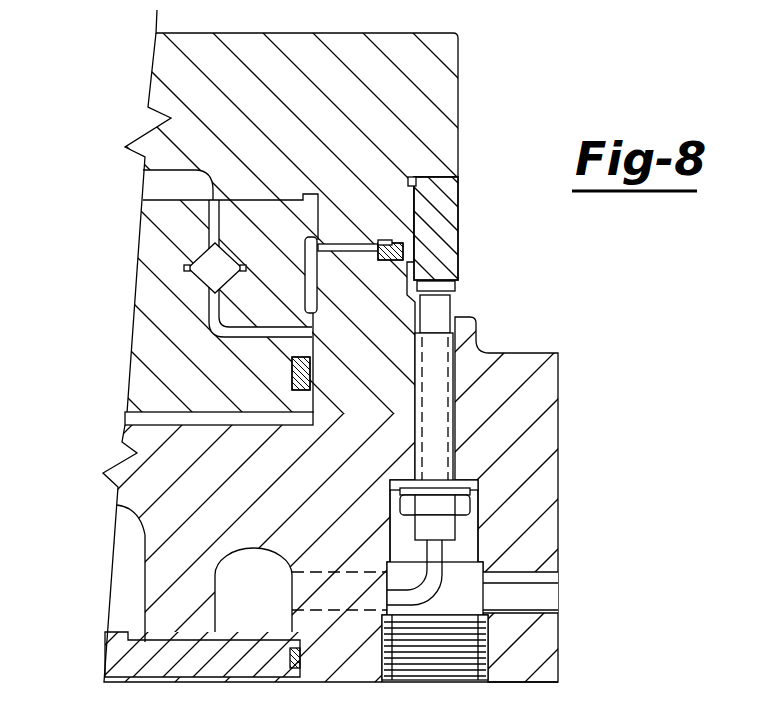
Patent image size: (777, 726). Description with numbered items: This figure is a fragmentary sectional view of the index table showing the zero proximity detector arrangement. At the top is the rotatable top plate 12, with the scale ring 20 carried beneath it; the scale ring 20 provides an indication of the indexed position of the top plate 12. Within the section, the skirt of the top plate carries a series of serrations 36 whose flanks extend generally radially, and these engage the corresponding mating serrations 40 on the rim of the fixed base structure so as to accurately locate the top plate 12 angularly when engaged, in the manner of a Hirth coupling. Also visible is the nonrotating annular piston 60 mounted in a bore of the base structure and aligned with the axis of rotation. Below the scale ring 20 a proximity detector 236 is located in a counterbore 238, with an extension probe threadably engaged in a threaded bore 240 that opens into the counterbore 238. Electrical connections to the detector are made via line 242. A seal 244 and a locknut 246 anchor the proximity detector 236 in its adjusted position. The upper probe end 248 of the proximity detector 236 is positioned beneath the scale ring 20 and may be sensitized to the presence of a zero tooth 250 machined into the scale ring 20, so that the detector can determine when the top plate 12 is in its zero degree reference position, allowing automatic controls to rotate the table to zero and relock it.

The top plate 12 is at (462, 84).
The scale ring 20 is at (458, 180).
The serrations 36 is at (342, 244).
The mating serrations 40 is at (367, 250).
The annular piston 60 is at (140, 336).
The proximity detector 236 is at (455, 364).
The counterbore 238 is at (477, 536).
The threaded bore 240 is at (449, 404).
The line 242 is at (478, 560).
The seal 244 is at (470, 502).
The locknut 246 is at (470, 528).
The upper probe end 248 is at (440, 314).
The zero tooth 250 is at (472, 290).